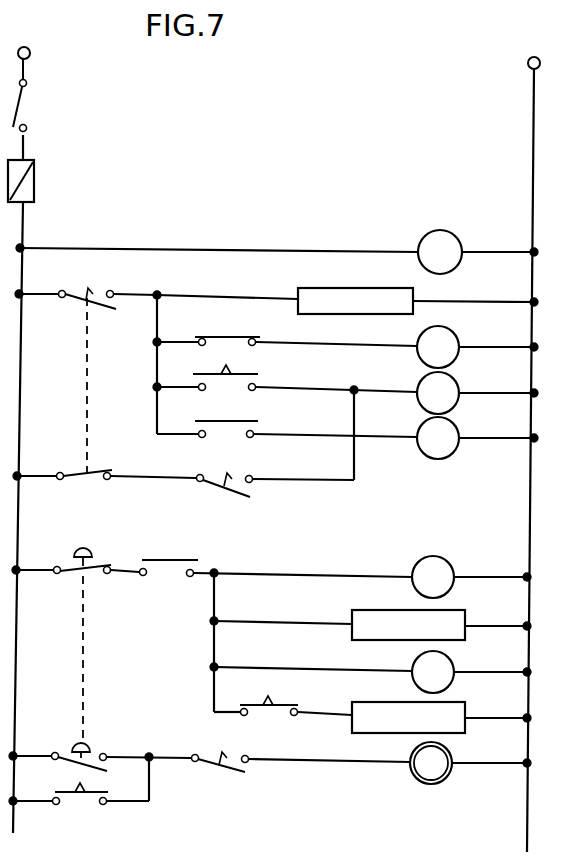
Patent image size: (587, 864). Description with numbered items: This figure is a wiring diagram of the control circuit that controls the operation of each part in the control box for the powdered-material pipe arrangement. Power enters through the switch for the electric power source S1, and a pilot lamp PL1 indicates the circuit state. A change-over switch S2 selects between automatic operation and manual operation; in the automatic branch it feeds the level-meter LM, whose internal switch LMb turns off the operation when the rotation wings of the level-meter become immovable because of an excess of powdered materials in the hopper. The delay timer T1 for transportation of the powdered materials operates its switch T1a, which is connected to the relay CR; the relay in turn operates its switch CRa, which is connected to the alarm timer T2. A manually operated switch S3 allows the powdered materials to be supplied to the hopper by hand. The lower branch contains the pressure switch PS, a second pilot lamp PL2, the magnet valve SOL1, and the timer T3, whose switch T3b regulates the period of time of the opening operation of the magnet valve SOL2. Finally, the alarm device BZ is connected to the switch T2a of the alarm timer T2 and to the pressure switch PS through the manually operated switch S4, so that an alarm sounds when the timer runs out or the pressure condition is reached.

The switch for the electric power source S1 is at (35, 141).
The change-over switch S2 is at (104, 371).
The pilot lamp PL1 is at (277, 252).
The level-meter LM is at (347, 301).
The switch in the level-meter LMb is at (285, 329).
The delay timer T1 is at (477, 347).
The switch of the timer T1 T1a is at (285, 370).
The relay CR is at (477, 393).
The switch of the relay CR CRa is at (279, 487).
The alarm timer T2 is at (477, 438).
The manually operated switch S3 is at (276, 471).
The pressure switch PS is at (100, 646).
The pilot lamp PL2 is at (362, 577).
The magnet valve SOL1 is at (370, 625).
The timer T3 is at (370, 672).
The switch of the timer T3 T3b is at (283, 696).
The magnet valve SOL2 is at (441, 717).
The manually operated switch S4 is at (301, 749).
The alarm device BZ is at (470, 763).
The switch of the timer T2 T2a is at (79, 810).